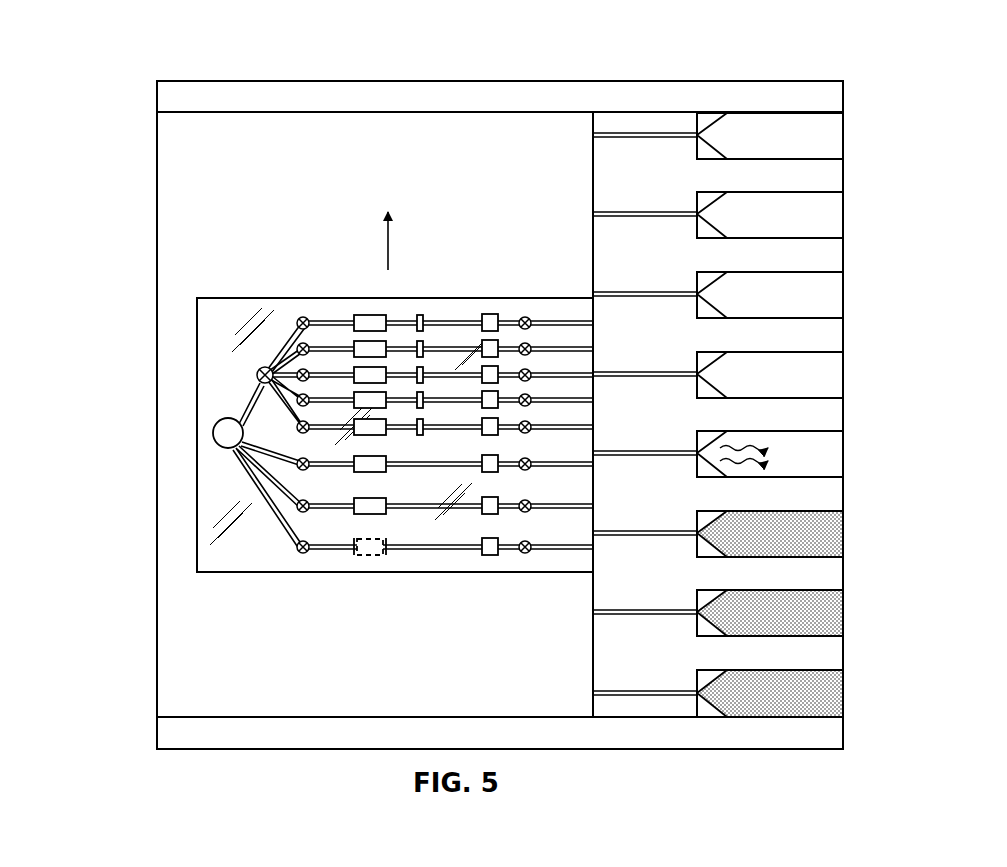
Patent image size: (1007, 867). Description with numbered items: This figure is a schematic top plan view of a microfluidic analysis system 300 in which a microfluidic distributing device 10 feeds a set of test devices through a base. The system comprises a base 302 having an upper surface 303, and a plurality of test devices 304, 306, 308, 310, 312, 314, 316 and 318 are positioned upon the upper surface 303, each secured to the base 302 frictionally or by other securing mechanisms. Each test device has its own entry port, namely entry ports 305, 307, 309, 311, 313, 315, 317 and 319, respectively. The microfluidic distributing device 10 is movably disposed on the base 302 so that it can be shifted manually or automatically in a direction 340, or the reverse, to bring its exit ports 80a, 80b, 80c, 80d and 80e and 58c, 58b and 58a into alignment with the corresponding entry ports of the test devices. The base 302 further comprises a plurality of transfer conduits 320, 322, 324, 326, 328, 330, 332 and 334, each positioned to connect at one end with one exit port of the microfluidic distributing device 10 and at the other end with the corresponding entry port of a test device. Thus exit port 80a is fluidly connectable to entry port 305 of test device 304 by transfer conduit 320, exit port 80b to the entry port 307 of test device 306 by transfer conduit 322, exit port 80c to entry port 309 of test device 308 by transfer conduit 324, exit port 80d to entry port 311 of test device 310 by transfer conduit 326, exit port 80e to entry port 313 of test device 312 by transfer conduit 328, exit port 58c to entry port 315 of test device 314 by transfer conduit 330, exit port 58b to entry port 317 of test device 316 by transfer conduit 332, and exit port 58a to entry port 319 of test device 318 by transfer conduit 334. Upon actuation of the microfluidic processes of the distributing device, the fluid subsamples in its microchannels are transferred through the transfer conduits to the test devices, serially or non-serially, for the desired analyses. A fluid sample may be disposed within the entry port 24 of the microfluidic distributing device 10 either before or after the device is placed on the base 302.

The microfluidic analysis system 300 is at (133, 50).
The base 302 is at (214, 79).
The upper surface 303 is at (308, 142).
The test device 304 is at (843, 135).
The entry port 305 is at (697, 137).
The test device 306 is at (843, 215).
The entry port 307 is at (697, 216).
The test device 308 is at (843, 294).
The entry port 309 is at (697, 296).
The test device 310 is at (843, 374).
The entry port 311 is at (697, 376).
The test device 312 is at (843, 453).
The entry port 313 is at (697, 457).
The test device 314 is at (843, 533).
The entry port 315 is at (697, 537).
The test device 316 is at (843, 612).
The entry port 317 is at (697, 616).
The test device 318 is at (843, 693).
The entry port 319 is at (697, 696).
The transfer conduit 320 is at (632, 132).
The transfer conduit 322 is at (632, 211).
The transfer conduit 324 is at (632, 291).
The transfer conduit 326 is at (632, 371).
The transfer conduit 328 is at (633, 456).
The transfer conduit 330 is at (633, 537).
The transfer conduit 332 is at (633, 616).
The transfer conduit 334 is at (628, 697).
The direction 340 is at (386, 236).
The microfluidic distributing device 10 is at (232, 297).
The entry port 24 is at (226, 418).
The exit port 80a is at (593, 323).
The exit port 80b is at (593, 349).
The exit port 80c is at (593, 375).
The exit port 80d is at (593, 400).
The exit port 80e is at (593, 427).
The exit port 58a is at (593, 547).
The exit port 58b is at (593, 506).
The exit port 58c is at (593, 464).